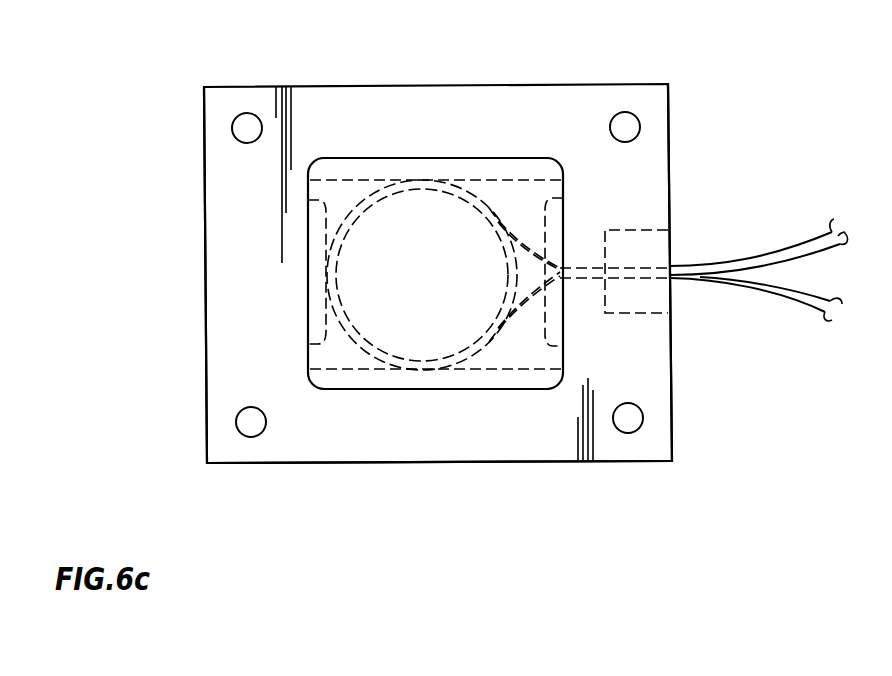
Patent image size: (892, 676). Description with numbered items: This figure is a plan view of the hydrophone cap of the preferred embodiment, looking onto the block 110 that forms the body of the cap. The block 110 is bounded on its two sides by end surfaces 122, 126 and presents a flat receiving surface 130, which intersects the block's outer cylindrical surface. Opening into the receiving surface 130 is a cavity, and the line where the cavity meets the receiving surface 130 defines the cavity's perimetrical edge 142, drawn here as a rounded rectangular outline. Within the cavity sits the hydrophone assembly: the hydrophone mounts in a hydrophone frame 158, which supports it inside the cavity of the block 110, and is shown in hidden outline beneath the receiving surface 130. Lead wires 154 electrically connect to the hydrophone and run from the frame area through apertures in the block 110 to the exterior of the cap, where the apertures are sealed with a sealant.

The block 110 is at (508, 85).
The end surface 122 is at (670, 153).
The end surface 126 is at (205, 241).
The receiving surface 130 is at (243, 367).
The perimetrical edge 142 is at (360, 158).
The lead wires 154 is at (813, 252).
The hydrophone frame 158 is at (458, 369).